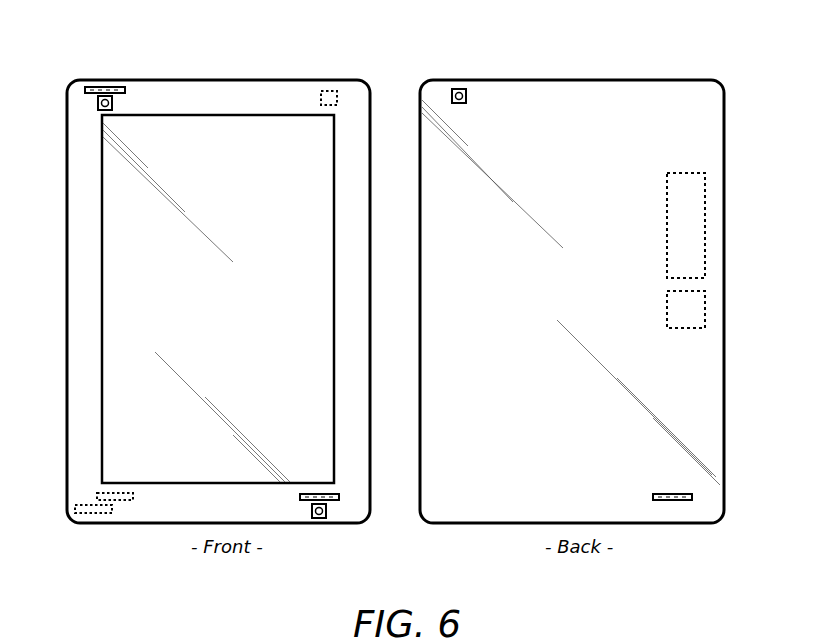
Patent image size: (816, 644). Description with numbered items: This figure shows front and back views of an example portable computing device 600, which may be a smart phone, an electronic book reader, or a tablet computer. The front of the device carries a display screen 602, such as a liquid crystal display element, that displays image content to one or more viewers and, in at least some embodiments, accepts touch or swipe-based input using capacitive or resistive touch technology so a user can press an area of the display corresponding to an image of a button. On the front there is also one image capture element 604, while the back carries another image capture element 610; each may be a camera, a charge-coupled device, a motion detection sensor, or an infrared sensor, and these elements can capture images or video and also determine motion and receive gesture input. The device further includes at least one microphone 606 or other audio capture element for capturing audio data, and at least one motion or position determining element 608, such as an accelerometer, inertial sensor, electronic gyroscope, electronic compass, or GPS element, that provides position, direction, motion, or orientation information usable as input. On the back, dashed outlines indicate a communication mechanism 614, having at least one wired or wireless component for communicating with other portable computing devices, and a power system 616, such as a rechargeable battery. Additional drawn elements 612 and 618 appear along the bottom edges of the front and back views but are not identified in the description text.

The portable computing device 600 is at (748, 88).
The display screen 602 is at (100, 220).
The image capture element 604 is at (97, 103).
The microphone 606 is at (115, 88).
The motion or position determining element 608 is at (332, 503).
The image capture element / touch and pressure sensitive material 610 is at (326, 90).
The microphone 612 is at (115, 502).
The communication mechanism 614 is at (705, 241).
The power system 616 is at (705, 313).
The connector port 618 is at (92, 513).